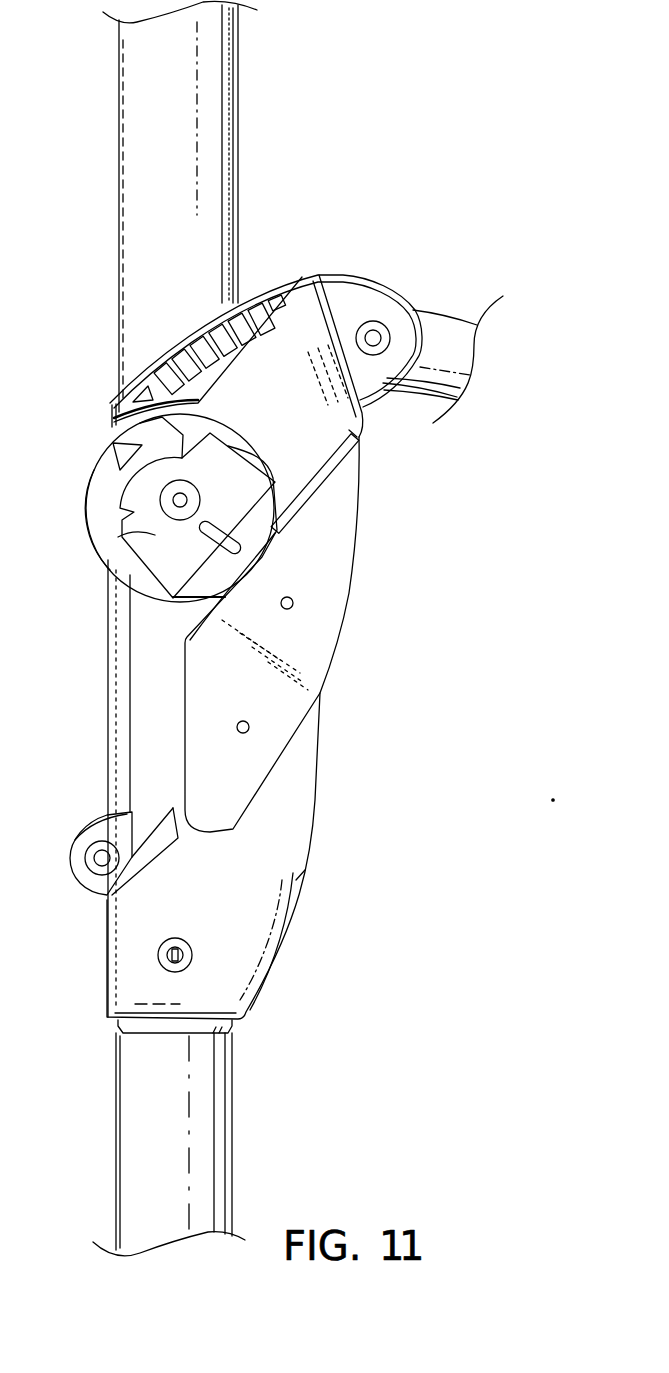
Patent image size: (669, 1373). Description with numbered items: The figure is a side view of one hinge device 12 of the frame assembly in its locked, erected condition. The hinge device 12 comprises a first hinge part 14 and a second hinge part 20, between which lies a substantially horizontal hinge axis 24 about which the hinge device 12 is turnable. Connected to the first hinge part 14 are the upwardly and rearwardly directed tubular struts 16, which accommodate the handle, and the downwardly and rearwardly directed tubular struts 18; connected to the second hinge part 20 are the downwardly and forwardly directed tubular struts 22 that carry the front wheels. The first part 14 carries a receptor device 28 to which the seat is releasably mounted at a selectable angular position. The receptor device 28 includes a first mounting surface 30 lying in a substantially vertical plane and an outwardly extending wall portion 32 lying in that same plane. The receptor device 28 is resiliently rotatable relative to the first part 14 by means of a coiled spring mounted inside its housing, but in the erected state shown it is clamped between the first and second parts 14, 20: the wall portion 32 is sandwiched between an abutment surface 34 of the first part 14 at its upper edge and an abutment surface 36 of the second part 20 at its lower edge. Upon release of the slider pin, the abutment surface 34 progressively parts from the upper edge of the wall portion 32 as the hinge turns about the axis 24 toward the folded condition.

The hinge device 12 is at (508, 350).
The first hinge part 14 is at (128, 633).
The tubular struts 16 is at (140, 192).
The tubular struts 18 is at (455, 335).
The second hinge part 20 is at (293, 872).
The tubular struts 22 is at (217, 1102).
The hinge axis 24 is at (98, 858).
The receptor device 28 is at (337, 300).
The first mounting surface 30 is at (113, 563).
The wall portion 32 is at (337, 438).
The abutment surface 34 is at (267, 303).
The abutment surface 36 is at (273, 542).